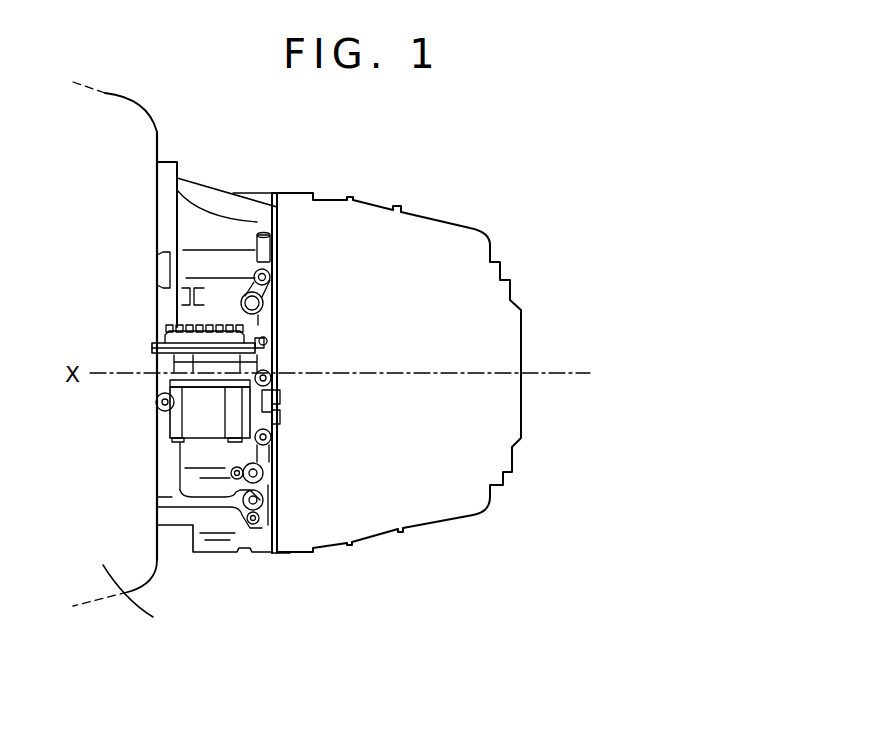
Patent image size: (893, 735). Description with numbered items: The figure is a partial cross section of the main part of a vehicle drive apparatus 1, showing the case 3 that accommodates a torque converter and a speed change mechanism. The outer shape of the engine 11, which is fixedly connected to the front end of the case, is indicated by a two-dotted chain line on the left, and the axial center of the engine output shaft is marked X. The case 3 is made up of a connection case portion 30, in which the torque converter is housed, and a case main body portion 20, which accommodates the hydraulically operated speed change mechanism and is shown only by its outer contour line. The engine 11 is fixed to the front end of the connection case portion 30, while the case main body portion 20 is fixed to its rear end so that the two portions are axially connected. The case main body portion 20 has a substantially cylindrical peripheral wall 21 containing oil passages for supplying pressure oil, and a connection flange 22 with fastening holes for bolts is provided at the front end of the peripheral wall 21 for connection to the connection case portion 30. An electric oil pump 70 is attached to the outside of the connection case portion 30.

The vehicle drive apparatus 1 is at (571, 186).
The case 3 is at (374, 548).
The engine 11 is at (125, 367).
The case main body portion 20 is at (362, 370).
The peripheral wall 21 is at (420, 218).
The connection flange 22 is at (287, 190).
The connection case portion 30 is at (228, 537).
The electric oil pump 70 is at (164, 329).